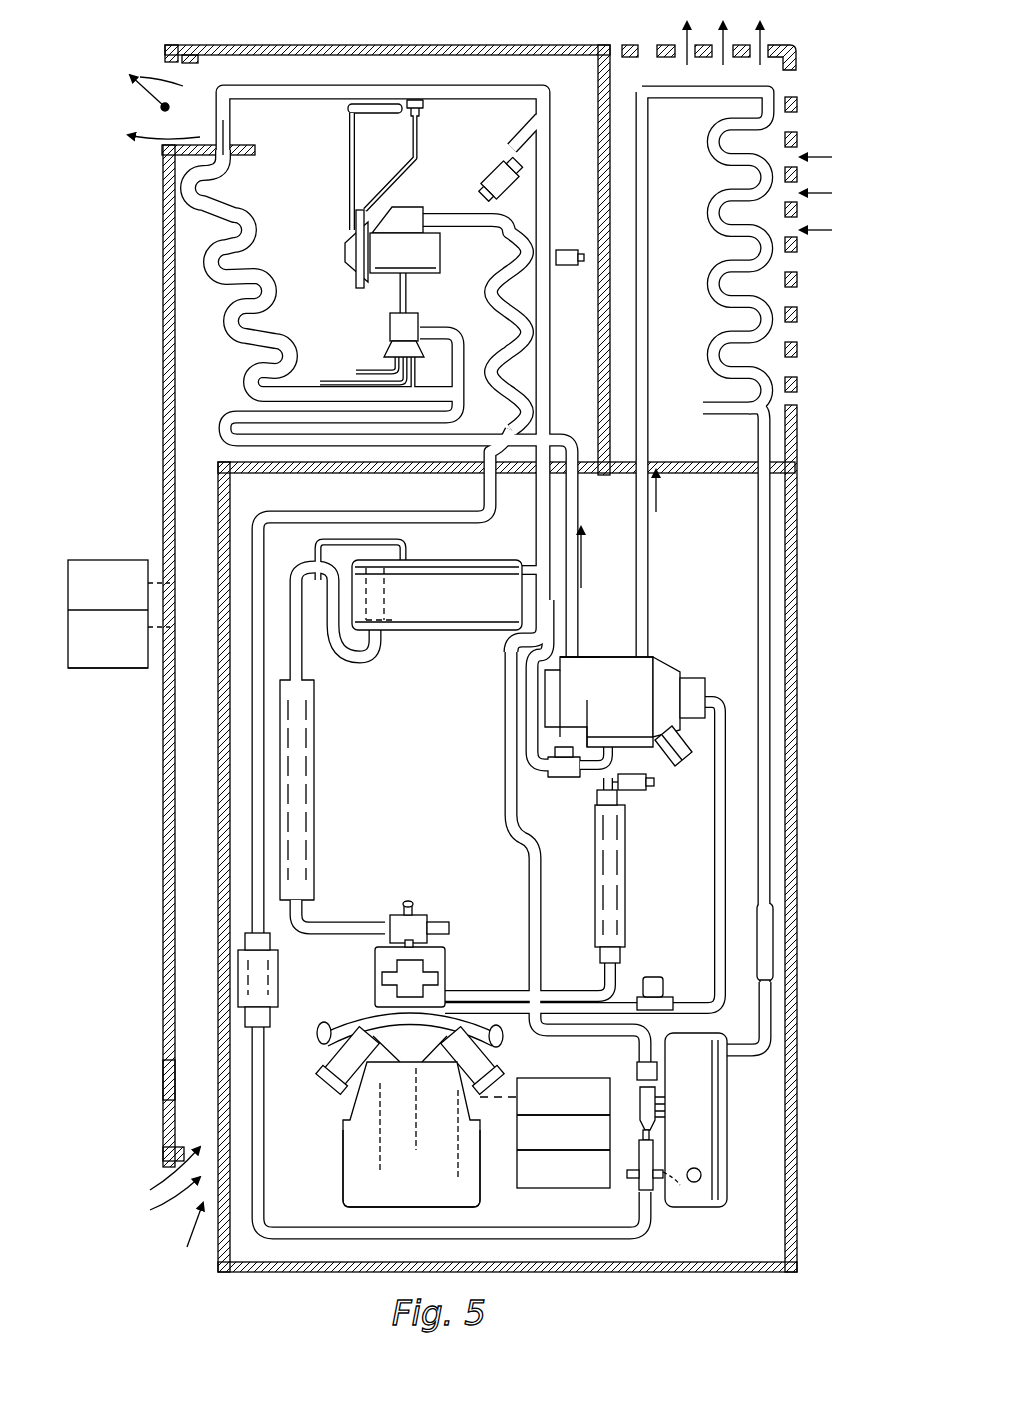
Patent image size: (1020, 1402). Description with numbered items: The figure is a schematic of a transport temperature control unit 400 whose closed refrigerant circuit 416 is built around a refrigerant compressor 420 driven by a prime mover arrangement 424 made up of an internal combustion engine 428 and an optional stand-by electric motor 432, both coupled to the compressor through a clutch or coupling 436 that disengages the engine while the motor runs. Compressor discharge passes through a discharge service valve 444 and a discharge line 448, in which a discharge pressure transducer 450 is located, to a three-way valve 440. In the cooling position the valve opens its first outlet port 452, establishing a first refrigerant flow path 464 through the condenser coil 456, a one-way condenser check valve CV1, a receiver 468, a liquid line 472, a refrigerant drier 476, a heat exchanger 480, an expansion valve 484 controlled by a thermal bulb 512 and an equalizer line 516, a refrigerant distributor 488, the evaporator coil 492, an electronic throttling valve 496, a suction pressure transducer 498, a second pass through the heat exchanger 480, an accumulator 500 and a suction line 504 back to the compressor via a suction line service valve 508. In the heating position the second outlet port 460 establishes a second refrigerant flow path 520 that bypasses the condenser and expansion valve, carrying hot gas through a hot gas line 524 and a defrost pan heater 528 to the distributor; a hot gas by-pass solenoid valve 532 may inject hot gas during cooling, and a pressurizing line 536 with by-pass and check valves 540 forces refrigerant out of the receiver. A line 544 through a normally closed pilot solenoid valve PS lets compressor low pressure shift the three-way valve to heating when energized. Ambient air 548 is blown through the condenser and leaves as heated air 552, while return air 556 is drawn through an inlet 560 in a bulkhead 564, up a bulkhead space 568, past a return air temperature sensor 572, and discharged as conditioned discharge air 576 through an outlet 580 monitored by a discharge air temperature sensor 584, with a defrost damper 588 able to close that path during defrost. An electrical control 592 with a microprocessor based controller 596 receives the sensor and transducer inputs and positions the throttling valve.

The temperature control unit 400 is at (810, 634).
The closed fluid refrigerant circuit 416 is at (470, 655).
The refrigerant compressor 420 is at (356, 1162).
The prime mover arrangement 424 is at (518, 1074).
The internal combustion engine 428 is at (522, 1183).
The stand-by electric motor 432 is at (568, 1078).
The clutch or coupling 436 is at (515, 1133).
The three-way valve 440 is at (668, 658).
The discharge service valve 444 is at (376, 975).
The discharge line 448 is at (462, 988).
The discharge pressure transducer 450 is at (647, 790).
The first outlet port 452 is at (650, 657).
The condenser coil 456 is at (708, 222).
The second outlet port 460 is at (576, 656).
The first refrigerant flow path 464 is at (660, 497).
The receiver 468 is at (708, 1086).
The liquid line 472 is at (642, 1238).
The refrigerant drier 476 is at (268, 1006).
The heat exchanger 480 is at (528, 356).
The expansion valve 484 is at (347, 265).
The refrigerant distributor 488 is at (388, 330).
The evaporator coil 492 is at (248, 212).
The electronic throttling valve 496 is at (495, 172).
The suction pressure transducer 498 is at (572, 248).
The accumulator 500 is at (433, 565).
The suction line 504 is at (325, 918).
The suction line service valve 508 is at (420, 912).
The thermal bulb 512 is at (373, 113).
The equalizer line 516 is at (421, 137).
The second refrigerant flow path 520 is at (585, 555).
The hot gas line 524 is at (577, 495).
The defrost pan heater 528 is at (225, 425).
The hot gas by-pass solenoid valve 532 is at (556, 777).
The by-pass or pressurizing line 536 is at (496, 785).
The by-pass and check valves 540 is at (656, 1105).
The conduit or line 544 is at (716, 868).
The ambient air 548 is at (822, 238).
The heated air 552 is at (765, 55).
The return air 556 is at (160, 1205).
The inlet 560 is at (181, 1244).
The bulkhead 564 is at (168, 1085).
The bulkhead space 568 is at (200, 912).
The return air temperature sensor 572 is at (165, 1152).
The discharge air 576 is at (153, 130).
The outlet 580 is at (160, 68).
The discharge air temperature sensor 584 is at (196, 58).
The defrost damper 588 is at (180, 120).
The electrical control 592 is at (100, 670).
The microprocessor based controller 596 is at (97, 560).
The pilot solenoid valve PS is at (655, 978).
The one-way condenser check valve CV1 is at (778, 922).